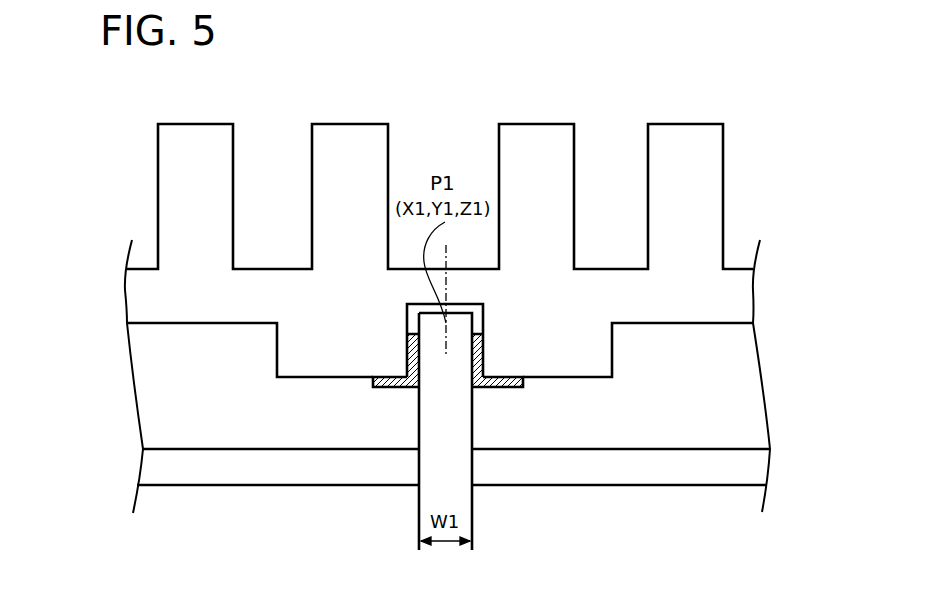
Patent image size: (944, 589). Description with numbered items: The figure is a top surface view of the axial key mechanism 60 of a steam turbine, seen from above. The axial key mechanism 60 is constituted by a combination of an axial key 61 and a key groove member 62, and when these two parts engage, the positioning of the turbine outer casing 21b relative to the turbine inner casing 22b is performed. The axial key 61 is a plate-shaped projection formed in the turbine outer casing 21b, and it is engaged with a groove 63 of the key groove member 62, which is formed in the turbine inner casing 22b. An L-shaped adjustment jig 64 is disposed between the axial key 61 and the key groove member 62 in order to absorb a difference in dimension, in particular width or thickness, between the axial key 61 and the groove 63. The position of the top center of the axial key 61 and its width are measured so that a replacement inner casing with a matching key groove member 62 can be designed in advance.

The turbine inner casing 22b is at (275, 269).
The axial key mechanism 60 is at (448, 431).
The key groove member 62 is at (277, 352).
The axial key 61 is at (420, 420).
The groove 63 is at (407, 347).
The adjustment jig 64 is at (487, 388).
The turbine outer casing 21b is at (273, 488).